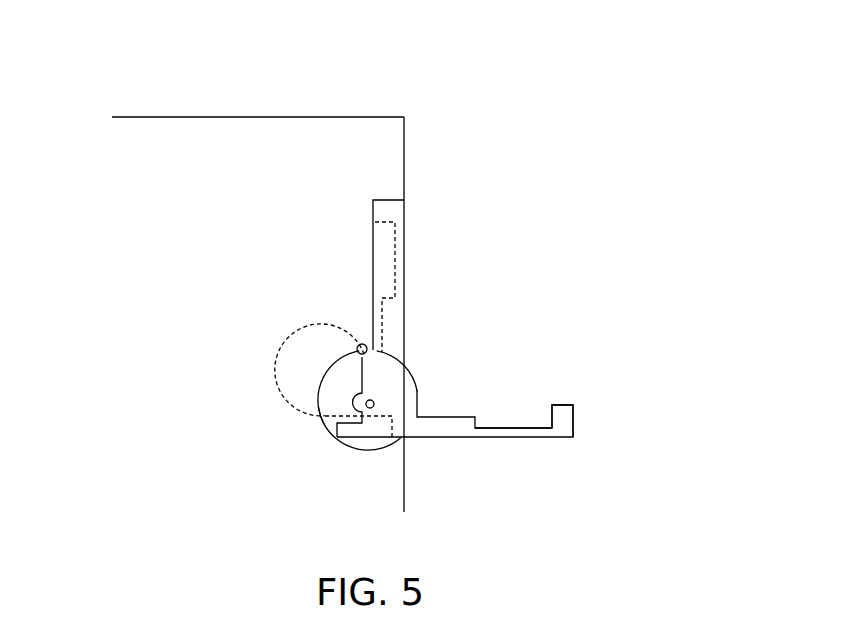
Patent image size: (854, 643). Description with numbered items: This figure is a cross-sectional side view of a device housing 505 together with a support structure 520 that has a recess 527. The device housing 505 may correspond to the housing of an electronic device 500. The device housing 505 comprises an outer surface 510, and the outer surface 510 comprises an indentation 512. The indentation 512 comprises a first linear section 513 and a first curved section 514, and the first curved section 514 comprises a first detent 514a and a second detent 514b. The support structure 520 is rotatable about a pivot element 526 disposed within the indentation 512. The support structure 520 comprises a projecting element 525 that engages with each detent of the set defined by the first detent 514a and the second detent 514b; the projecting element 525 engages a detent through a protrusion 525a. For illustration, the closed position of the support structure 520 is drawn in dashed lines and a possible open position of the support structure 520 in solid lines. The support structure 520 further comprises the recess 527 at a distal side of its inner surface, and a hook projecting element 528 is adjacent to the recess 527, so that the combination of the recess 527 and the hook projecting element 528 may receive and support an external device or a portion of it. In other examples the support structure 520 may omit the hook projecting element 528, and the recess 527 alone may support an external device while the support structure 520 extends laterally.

The electronic device 500 is at (343, 40).
The device housing 505 is at (247, 116).
The outer surface 510 is at (405, 172).
The indentation 512 is at (390, 277).
The first linear section 513 is at (373, 265).
The first curved section 514 is at (333, 373).
The first detent 514a is at (320, 418).
The second detent 514b is at (360, 344).
The support structure 520 is at (595, 422).
The projecting element 525 is at (377, 390).
The protrusion 525a is at (376, 358).
The pivot element 526 is at (371, 413).
The recess 527 is at (515, 418).
The hook projecting element 528 is at (574, 405).